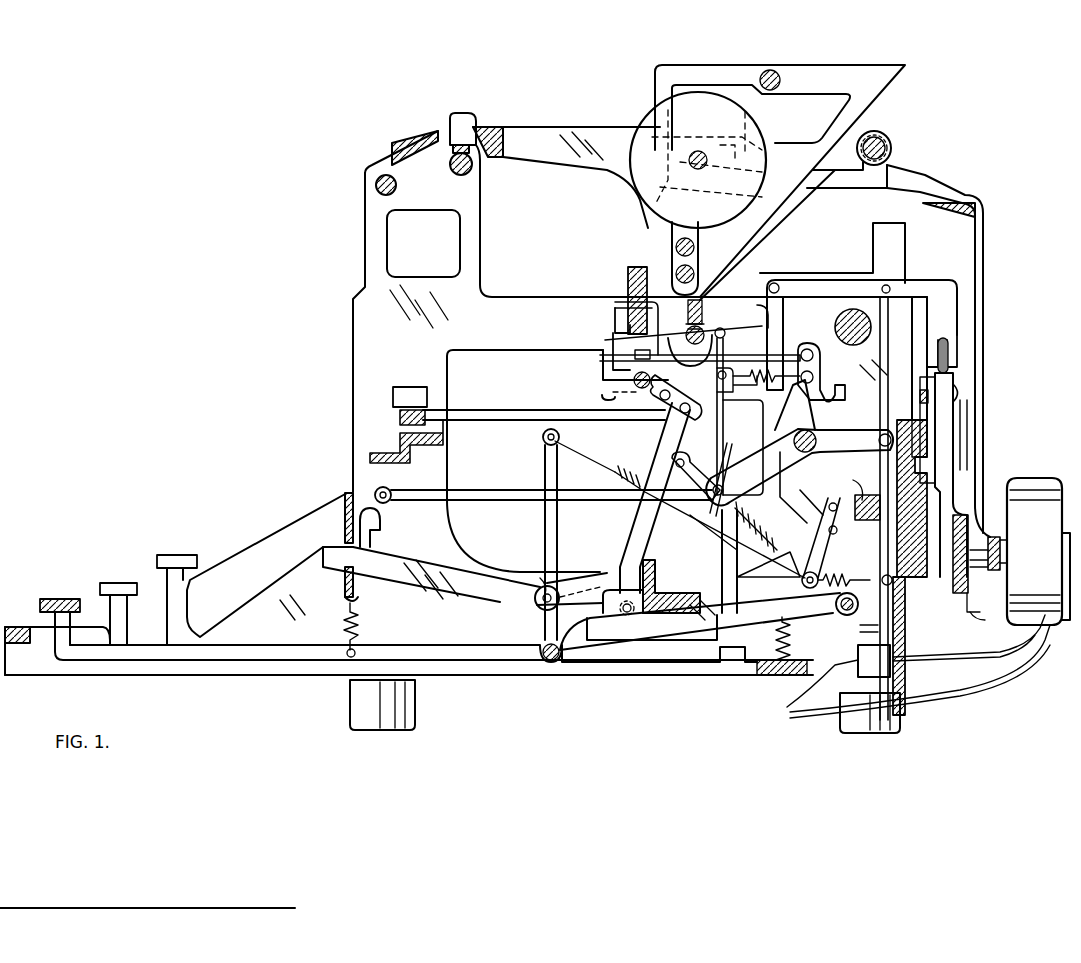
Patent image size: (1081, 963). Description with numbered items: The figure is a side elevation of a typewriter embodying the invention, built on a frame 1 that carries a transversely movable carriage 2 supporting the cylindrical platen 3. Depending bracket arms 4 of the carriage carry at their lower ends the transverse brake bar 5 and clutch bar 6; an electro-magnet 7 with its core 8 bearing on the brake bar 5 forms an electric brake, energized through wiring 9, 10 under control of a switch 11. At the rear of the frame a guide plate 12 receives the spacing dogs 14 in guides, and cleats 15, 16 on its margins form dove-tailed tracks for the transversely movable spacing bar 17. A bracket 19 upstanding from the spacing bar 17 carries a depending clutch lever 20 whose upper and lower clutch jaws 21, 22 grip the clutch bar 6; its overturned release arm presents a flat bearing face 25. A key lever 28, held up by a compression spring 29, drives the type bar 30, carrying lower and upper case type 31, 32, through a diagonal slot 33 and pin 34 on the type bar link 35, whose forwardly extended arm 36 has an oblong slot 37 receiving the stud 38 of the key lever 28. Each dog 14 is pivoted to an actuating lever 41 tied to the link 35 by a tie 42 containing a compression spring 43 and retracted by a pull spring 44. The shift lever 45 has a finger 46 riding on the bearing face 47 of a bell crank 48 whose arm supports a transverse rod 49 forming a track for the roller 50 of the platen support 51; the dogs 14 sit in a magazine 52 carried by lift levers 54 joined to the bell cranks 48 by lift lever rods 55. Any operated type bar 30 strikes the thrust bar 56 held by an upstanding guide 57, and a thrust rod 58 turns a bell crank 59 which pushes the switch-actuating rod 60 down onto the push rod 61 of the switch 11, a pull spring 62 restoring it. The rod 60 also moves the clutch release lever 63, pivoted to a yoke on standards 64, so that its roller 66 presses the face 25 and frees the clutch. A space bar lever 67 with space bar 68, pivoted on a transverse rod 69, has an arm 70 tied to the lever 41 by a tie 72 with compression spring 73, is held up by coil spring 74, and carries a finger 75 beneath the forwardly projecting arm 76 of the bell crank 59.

The frame 1 is at (353, 358).
The carriage 2 is at (626, 128).
The platen 3 is at (750, 124).
The bracket arms 4 is at (980, 310).
The brake bar 5 is at (998, 532).
The clutch bar 6 is at (975, 597).
The electro-magnet 7 is at (1030, 485).
The core 8 is at (978, 572).
The wiring 9 is at (938, 655).
The wiring 10 is at (958, 680).
The switch 11 is at (860, 650).
The guide plate 12 is at (925, 455).
The spacing dogs 14 is at (848, 497).
The cleat 15 is at (905, 433).
The cleat 16 is at (918, 580).
The spacing bar 17 is at (935, 470).
The bracket 19 is at (925, 410).
The clutch lever 20 is at (962, 475).
The upper clutch jaw 21 is at (965, 518).
The lower clutch jaw 22 is at (983, 622).
The bearing face 25 is at (953, 375).
The key lever 28 is at (418, 557).
The compression spring 29 is at (790, 620).
The type bar 30 is at (578, 412).
The lower case type 31 is at (418, 388).
The upper case type 32 is at (396, 388).
The diagonal slot 33 is at (668, 408).
The pin 34 is at (688, 400).
The type bar link 35 is at (628, 525).
The arm 36 is at (585, 575).
The oblong slot 37 is at (545, 605).
The stud 38 is at (541, 556).
The actuating lever 41 is at (825, 545).
The tie 42 is at (700, 480).
The compression spring 43 is at (758, 532).
The pull spring 44 is at (844, 571).
The shift lever 45 is at (148, 645).
The finger 46 is at (840, 460).
The bearing face 47 is at (858, 363).
The bell crank 48 is at (835, 327).
The transverse rod 49 is at (671, 339).
The roller 50 is at (703, 300).
The platen support 51 is at (740, 70).
The magazine 52 is at (854, 475).
The lift levers 54 is at (492, 490).
The lift lever rods 55 is at (725, 436).
The thrust bar 56 is at (635, 355).
The guide 57 is at (620, 300).
The thrust rod 58 is at (694, 353).
The bell crank 59 is at (810, 418).
The switch-actuating rod 60 is at (893, 300).
The push rod 61 is at (875, 633).
The pull spring 62 is at (766, 395).
The clutch release lever 63 is at (905, 290).
The standards 64 is at (765, 315).
The roller 66 is at (952, 348).
The space bar lever 67 is at (305, 663).
The space bar 68 is at (56, 599).
The transverse rod 69 is at (556, 665).
The arm 70 is at (548, 525).
The tie 72 is at (597, 460).
The compression spring 73 is at (710, 517).
The coil spring 74 is at (362, 628).
The finger 75 is at (735, 565).
The arm 76 is at (748, 482).